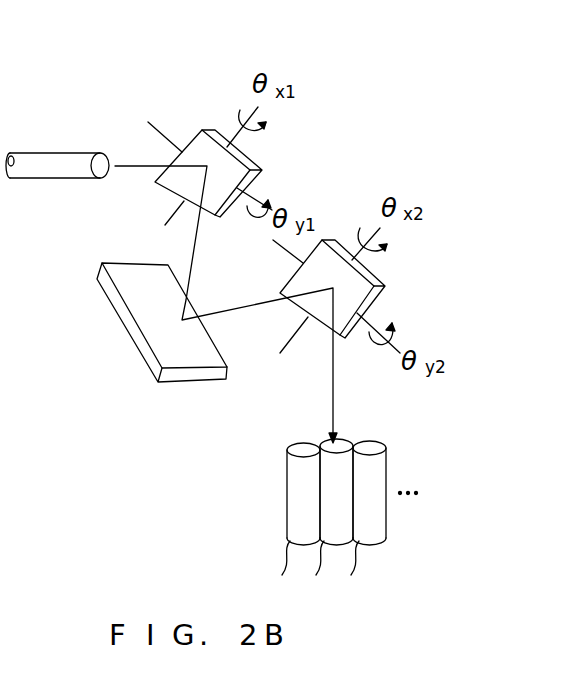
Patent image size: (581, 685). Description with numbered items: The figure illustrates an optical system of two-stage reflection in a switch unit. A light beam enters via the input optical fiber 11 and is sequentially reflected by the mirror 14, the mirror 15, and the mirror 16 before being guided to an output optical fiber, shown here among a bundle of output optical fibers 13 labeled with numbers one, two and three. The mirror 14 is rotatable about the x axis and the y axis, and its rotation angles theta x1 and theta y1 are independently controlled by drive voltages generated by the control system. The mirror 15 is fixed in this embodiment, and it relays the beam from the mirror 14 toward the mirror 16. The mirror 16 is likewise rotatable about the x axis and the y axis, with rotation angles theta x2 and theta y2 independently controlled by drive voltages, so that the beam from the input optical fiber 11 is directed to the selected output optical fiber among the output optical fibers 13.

The input optical fiber 11 is at (55, 152).
The optical fibers 13 is at (285, 490).
The mirror 14 is at (201, 128).
The mirror 15 is at (122, 327).
The mirror 16 is at (325, 237).